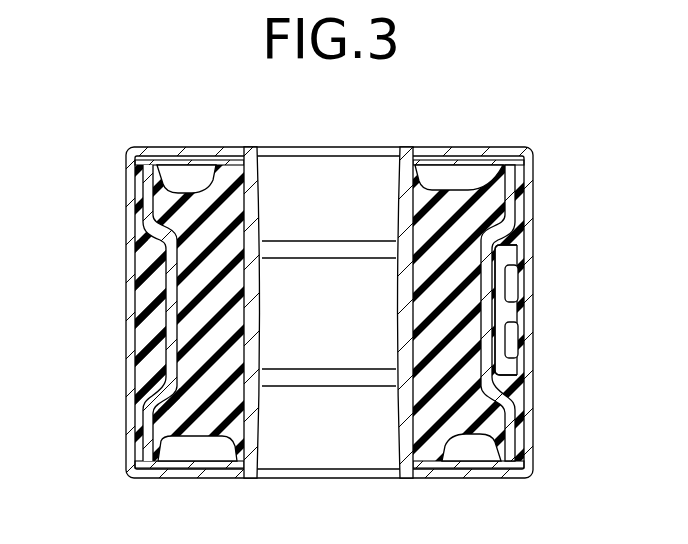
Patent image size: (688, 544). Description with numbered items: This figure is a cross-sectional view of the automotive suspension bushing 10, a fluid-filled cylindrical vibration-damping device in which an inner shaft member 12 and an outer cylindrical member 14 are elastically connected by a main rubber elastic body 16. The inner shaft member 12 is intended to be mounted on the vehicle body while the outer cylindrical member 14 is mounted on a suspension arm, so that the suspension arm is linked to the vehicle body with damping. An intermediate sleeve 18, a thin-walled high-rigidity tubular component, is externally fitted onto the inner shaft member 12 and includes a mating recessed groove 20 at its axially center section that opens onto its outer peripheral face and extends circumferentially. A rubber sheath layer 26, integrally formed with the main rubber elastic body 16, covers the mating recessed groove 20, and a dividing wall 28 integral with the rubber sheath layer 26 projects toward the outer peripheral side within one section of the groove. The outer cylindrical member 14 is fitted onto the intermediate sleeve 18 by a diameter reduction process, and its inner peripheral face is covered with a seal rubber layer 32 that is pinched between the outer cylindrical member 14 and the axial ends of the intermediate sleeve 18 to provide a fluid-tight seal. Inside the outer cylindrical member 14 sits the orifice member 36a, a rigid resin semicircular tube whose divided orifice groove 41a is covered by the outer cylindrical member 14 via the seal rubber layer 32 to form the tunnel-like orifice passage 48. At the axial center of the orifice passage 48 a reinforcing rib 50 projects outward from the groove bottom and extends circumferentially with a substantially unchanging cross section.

The automotive suspension bushing 10 is at (496, 117).
The inner shaft member 12 is at (252, 177).
The outer cylindrical member 14 is at (132, 188).
The main rubber elastic body 16 is at (202, 420).
The intermediate sleeve 18 is at (145, 435).
The mating recessed groove 20 is at (153, 240).
The rubber sheath layer 26 is at (490, 258).
The dividing wall 28 is at (155, 322).
The seal rubber layer 32 is at (140, 368).
The orifice member 36a is at (505, 373).
The divided orifice groove 41a is at (512, 353).
The orifice passage 48 is at (512, 277).
The reinforcing rib 50 is at (510, 312).